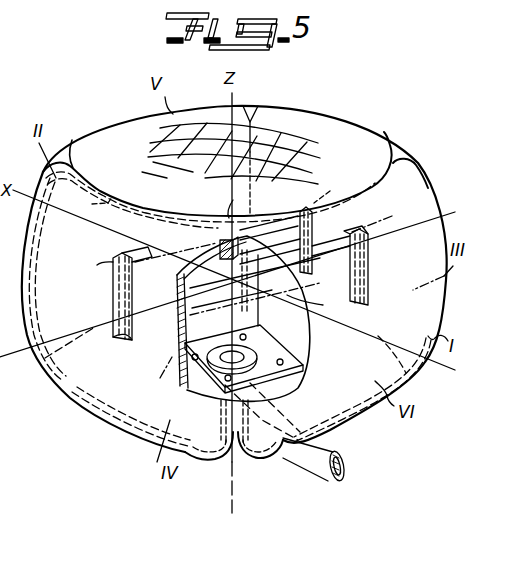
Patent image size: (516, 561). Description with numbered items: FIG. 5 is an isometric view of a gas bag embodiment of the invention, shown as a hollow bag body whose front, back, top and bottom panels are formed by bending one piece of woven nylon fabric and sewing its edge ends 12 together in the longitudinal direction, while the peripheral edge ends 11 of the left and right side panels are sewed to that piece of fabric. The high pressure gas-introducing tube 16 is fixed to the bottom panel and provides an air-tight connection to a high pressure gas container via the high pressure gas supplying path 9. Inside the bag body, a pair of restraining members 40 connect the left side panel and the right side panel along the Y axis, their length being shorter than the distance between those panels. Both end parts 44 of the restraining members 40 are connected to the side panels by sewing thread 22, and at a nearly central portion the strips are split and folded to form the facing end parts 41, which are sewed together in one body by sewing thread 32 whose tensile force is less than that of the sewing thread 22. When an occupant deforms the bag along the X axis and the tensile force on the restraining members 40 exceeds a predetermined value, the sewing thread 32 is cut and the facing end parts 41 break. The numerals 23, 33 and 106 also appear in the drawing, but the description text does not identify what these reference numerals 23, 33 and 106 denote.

The high pressure gas supplying path 9 is at (303, 464).
The peripheral edge ends 11 is at (112, 193).
The edge ends 12 is at (358, 420).
The high pressure gas-introducing tube 16 is at (243, 357).
The sewing thread 22 is at (124, 330).
The channel member 23 is at (112, 334).
The sewing thread 32 is at (256, 303).
The support post 33 is at (218, 253).
The restraining members 40 is at (141, 252).
The facing end parts 41 is at (236, 238).
The end parts 44 is at (242, 286).
The cushion body 106 is at (412, 168).